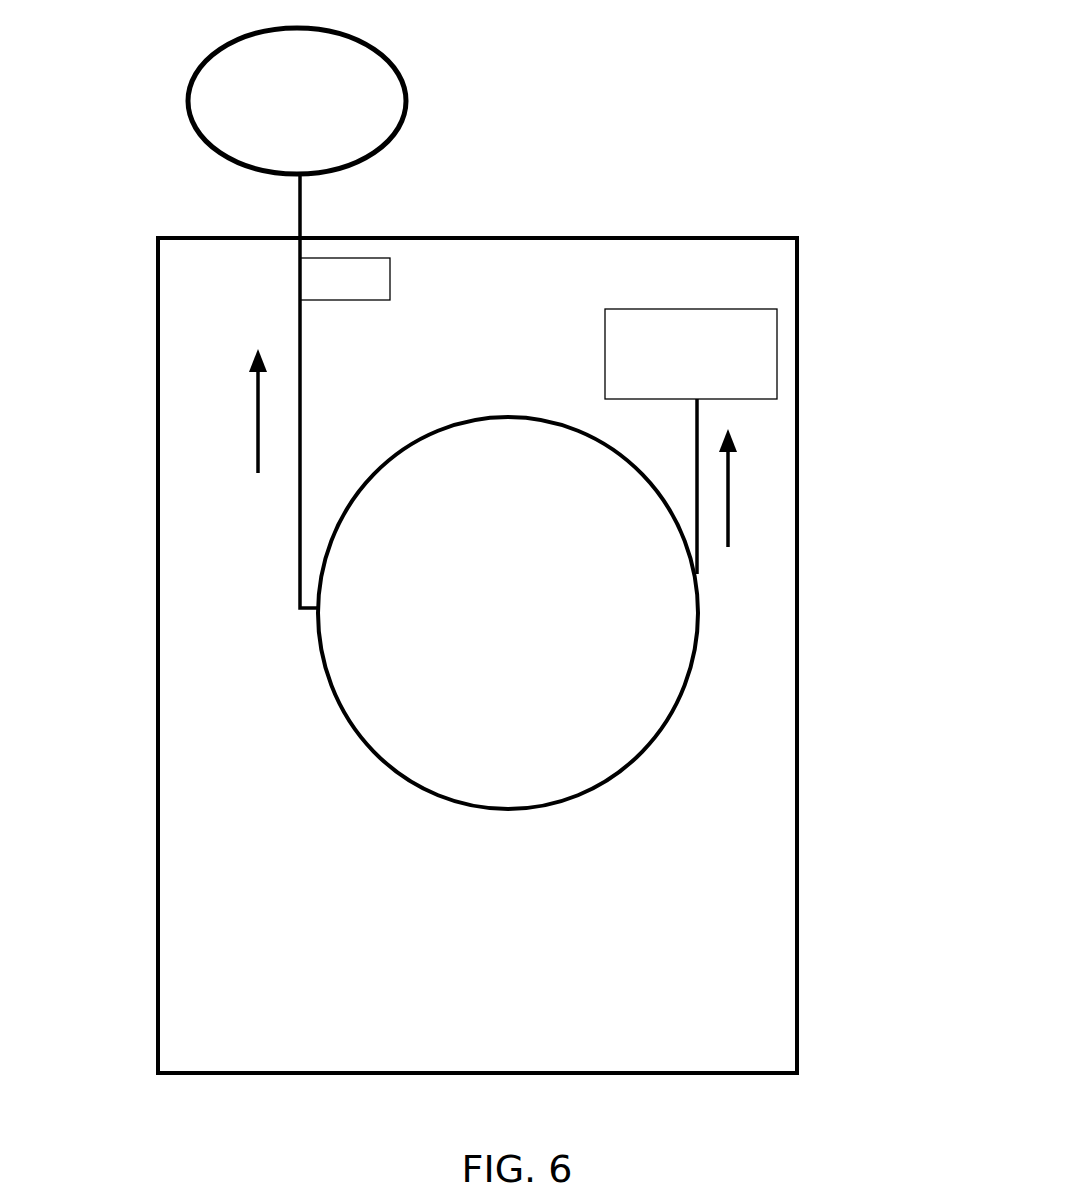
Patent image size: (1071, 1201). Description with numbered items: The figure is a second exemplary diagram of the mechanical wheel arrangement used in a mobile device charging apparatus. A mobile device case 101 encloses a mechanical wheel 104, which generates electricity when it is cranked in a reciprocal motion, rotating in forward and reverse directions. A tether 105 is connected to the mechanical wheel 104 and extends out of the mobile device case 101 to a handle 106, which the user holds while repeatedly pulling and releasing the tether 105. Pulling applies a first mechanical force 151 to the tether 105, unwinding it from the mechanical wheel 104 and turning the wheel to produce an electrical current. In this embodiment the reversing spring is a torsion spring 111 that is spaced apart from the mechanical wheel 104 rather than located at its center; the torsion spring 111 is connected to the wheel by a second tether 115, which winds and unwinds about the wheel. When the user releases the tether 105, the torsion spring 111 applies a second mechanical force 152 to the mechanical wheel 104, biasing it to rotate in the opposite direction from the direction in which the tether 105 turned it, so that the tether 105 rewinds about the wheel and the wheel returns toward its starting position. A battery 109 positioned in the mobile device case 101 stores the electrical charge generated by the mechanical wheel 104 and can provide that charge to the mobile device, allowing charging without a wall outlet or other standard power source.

The mobile device case 101 is at (808, 218).
The mechanical wheel 104 is at (642, 613).
The tether 105 is at (292, 338).
The handle 106 is at (189, 113).
The battery 109 is at (345, 279).
The torsion spring 111 is at (777, 350).
The second tether 115 is at (697, 698).
The first mechanical force 151 is at (255, 450).
The second mechanical force 152 is at (730, 482).